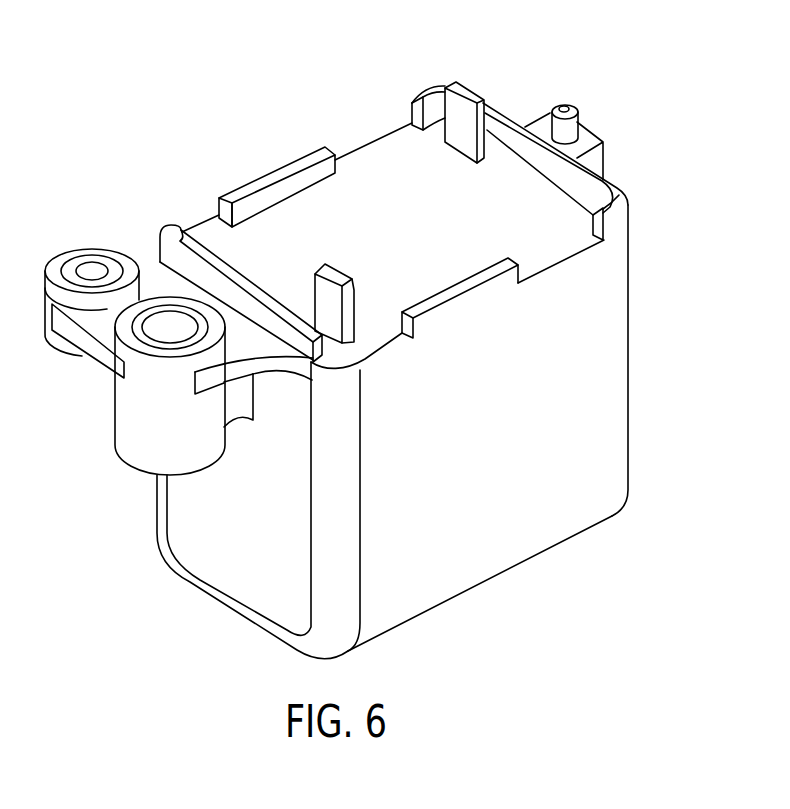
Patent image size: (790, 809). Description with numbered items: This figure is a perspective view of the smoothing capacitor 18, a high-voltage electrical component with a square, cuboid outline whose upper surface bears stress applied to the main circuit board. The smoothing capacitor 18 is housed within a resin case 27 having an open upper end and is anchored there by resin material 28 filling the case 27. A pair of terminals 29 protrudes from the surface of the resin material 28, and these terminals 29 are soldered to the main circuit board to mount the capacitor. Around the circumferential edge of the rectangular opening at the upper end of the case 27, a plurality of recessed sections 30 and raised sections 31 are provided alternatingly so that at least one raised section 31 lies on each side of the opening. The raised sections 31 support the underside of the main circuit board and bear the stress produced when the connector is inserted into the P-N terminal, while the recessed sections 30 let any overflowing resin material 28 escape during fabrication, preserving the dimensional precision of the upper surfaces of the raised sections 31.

The smoothing capacitor 18 is at (520, 566).
The resin case 27 is at (237, 558).
The resin material 28 is at (395, 177).
The terminals 29 is at (463, 110).
The recessed sections 30 is at (552, 250).
The raised sections 31 is at (267, 183).